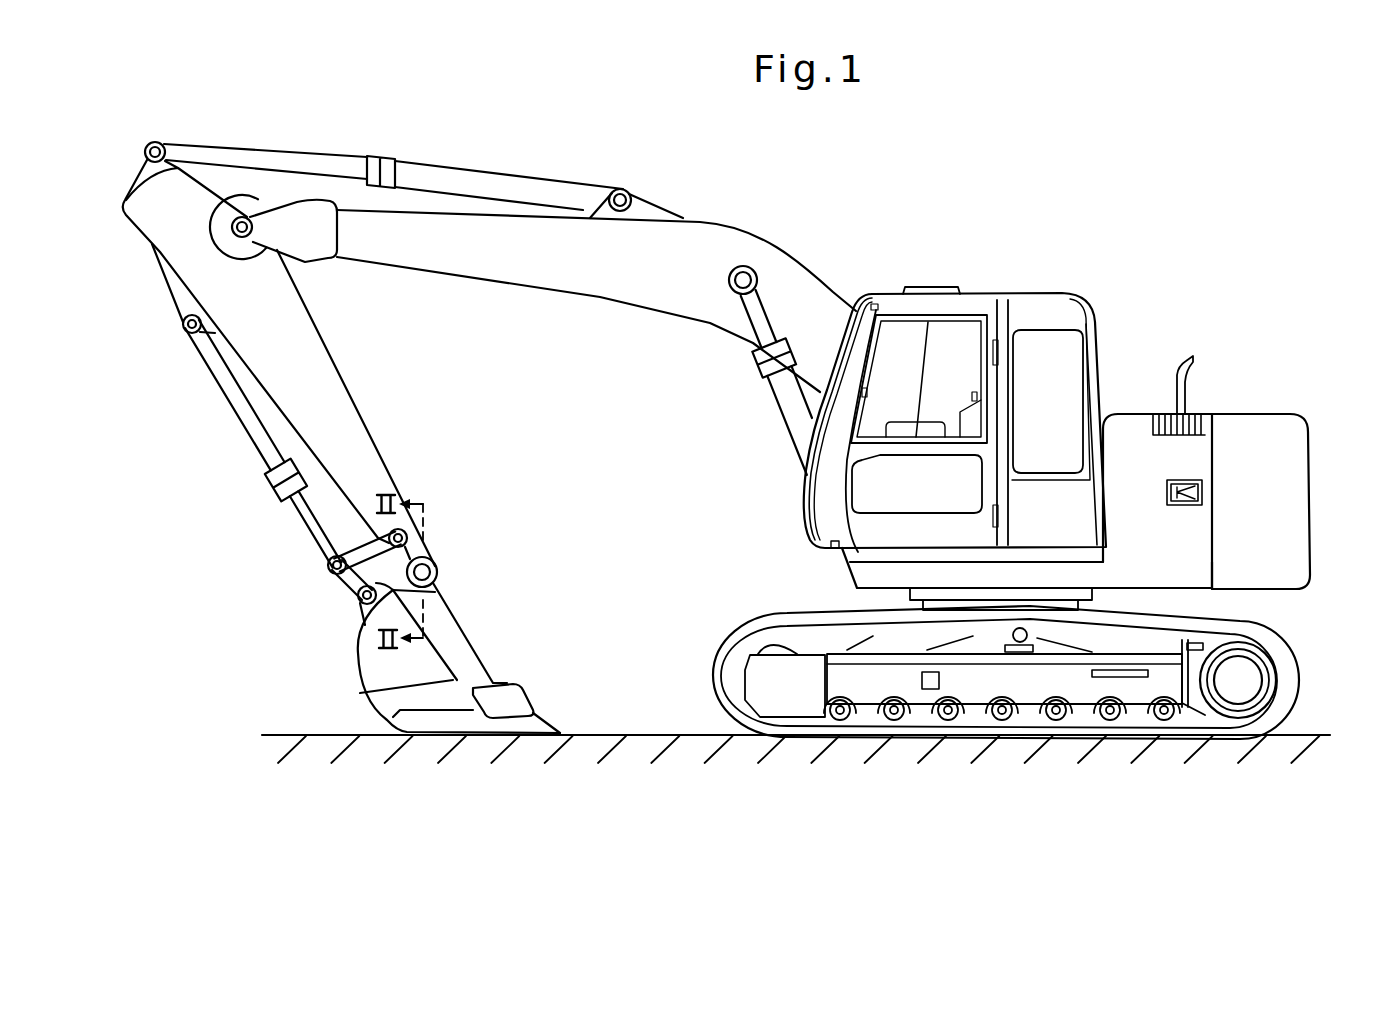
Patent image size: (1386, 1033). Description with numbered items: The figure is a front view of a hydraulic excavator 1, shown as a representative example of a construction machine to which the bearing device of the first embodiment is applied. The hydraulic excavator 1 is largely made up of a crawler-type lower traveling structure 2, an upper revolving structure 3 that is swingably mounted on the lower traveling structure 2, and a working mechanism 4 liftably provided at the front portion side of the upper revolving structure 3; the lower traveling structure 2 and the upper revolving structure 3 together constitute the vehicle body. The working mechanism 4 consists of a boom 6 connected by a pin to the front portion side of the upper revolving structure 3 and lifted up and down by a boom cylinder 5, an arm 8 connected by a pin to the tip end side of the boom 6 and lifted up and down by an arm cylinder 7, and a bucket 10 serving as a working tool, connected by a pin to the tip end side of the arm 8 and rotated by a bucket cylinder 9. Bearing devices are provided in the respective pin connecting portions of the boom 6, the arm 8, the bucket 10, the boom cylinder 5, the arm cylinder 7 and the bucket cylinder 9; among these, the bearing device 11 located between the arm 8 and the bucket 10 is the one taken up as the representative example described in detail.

The hydraulic excavator 1 is at (986, 283).
The lower traveling structure 2 is at (1308, 687).
The upper revolving structure 3 is at (1135, 400).
The working mechanism 4 is at (735, 214).
The boom cylinder 5 is at (792, 417).
The boom 6 is at (643, 287).
The arm cylinder 7 is at (537, 188).
The arm 8 is at (315, 378).
The bucket cylinder 9 is at (250, 420).
The bucket 10 is at (365, 670).
The bearing device 11 is at (448, 561).